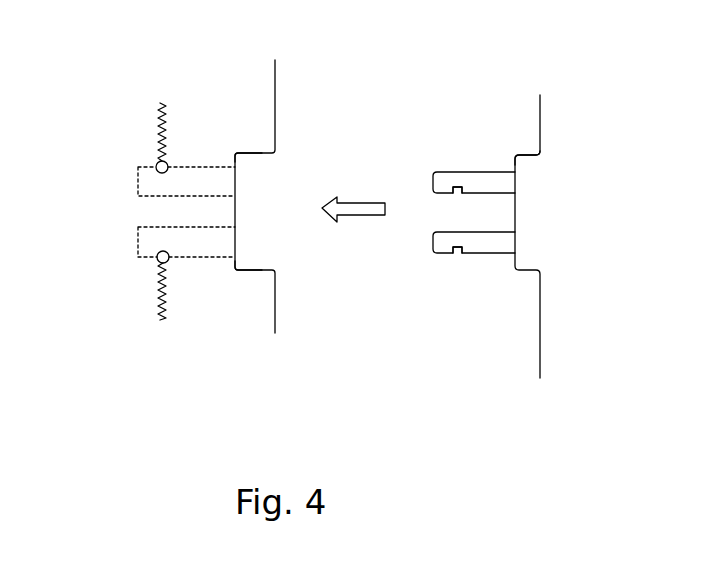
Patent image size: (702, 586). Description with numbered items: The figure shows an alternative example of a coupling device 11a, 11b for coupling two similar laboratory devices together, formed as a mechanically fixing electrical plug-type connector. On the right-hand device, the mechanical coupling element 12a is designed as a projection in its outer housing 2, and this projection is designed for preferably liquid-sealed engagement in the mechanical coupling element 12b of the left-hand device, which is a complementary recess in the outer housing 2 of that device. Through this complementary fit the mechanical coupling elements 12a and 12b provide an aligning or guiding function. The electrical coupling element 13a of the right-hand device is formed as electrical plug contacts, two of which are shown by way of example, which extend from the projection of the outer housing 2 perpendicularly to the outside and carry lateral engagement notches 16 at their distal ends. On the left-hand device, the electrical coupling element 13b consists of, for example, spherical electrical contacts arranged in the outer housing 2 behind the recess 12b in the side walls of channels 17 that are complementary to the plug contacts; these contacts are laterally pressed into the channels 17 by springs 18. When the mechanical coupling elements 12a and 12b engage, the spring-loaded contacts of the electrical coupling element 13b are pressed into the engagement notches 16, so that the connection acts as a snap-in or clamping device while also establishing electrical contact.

The outer housing 2 is at (275, 78).
The coupling device 11a is at (471, 236).
The coupling device 11b is at (304, 229).
The mechanical coupling element 12a is at (522, 177).
The mechanical coupling element 12b is at (263, 155).
The electrical coupling element 13a is at (490, 183).
The electrical coupling element 13b is at (168, 164).
The engagement notches 16 is at (457, 172).
The channels 17 is at (210, 245).
The springs 18 is at (155, 137).